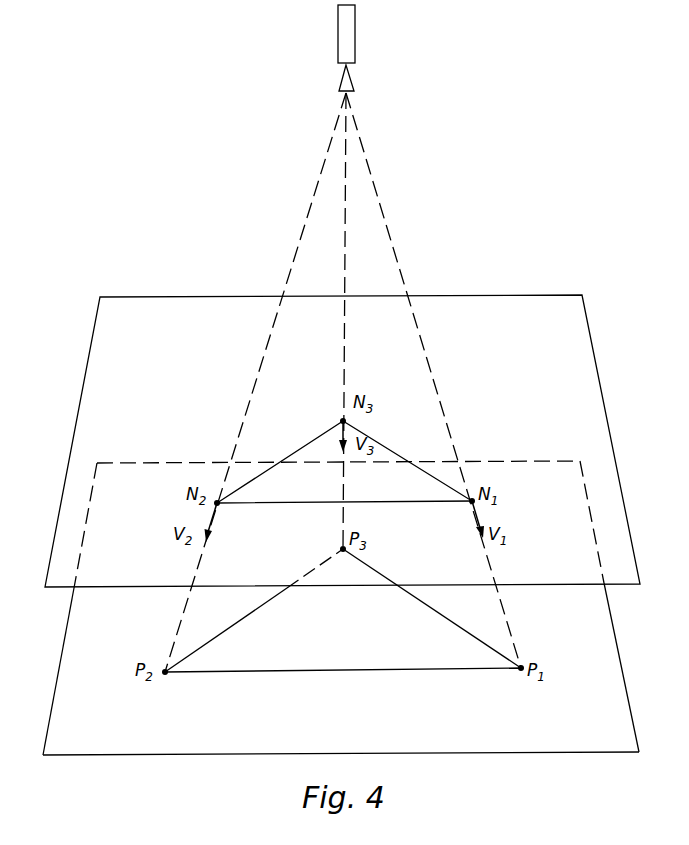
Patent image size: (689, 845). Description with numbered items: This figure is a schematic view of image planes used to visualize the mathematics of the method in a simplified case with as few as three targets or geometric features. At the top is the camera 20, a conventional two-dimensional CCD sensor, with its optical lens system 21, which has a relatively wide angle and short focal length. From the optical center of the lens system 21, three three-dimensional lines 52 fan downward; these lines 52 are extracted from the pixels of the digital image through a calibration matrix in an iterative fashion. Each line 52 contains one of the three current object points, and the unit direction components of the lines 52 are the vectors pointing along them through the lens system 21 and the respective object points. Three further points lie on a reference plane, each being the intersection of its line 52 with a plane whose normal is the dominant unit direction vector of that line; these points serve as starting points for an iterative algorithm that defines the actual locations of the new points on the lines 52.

The camera 20 is at (356, 46).
The optical lens system 21 is at (353, 82).
The 3-D lines 52 is at (295, 255).